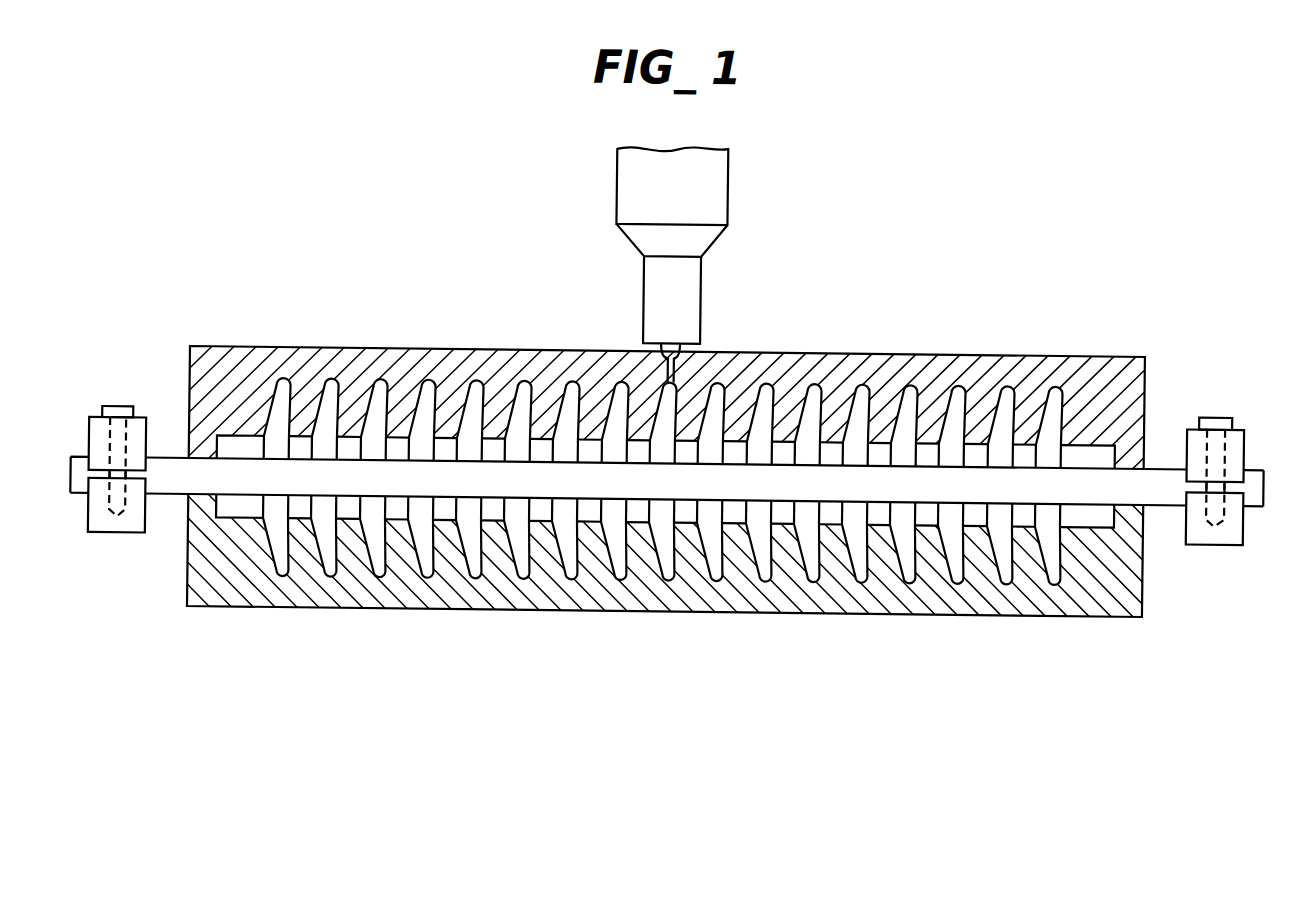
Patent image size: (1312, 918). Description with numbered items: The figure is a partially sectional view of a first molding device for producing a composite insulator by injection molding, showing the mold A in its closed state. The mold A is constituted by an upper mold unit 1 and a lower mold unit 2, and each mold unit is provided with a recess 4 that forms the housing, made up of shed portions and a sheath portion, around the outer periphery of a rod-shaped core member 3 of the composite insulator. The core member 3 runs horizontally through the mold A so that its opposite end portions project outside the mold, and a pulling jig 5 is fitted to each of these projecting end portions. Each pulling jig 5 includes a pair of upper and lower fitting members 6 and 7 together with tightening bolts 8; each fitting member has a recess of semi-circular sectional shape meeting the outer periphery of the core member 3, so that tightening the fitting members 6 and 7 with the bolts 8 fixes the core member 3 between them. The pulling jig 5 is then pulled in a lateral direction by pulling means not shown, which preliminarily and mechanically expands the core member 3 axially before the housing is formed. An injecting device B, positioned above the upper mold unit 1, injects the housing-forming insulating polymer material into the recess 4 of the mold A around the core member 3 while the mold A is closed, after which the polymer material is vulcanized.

The upper mold unit 1 is at (997, 346).
The lower mold unit 2 is at (1108, 569).
The core member 3 is at (1252, 466).
The recess 4 is at (1051, 537).
The pulling jig 5 is at (657, 432).
The upper fitting member 6 is at (92, 437).
The lower fitting member 7 is at (90, 516).
The tightening bolt 8 is at (90, 402).
The mold A is at (682, 466).
The injecting device B is at (716, 180).